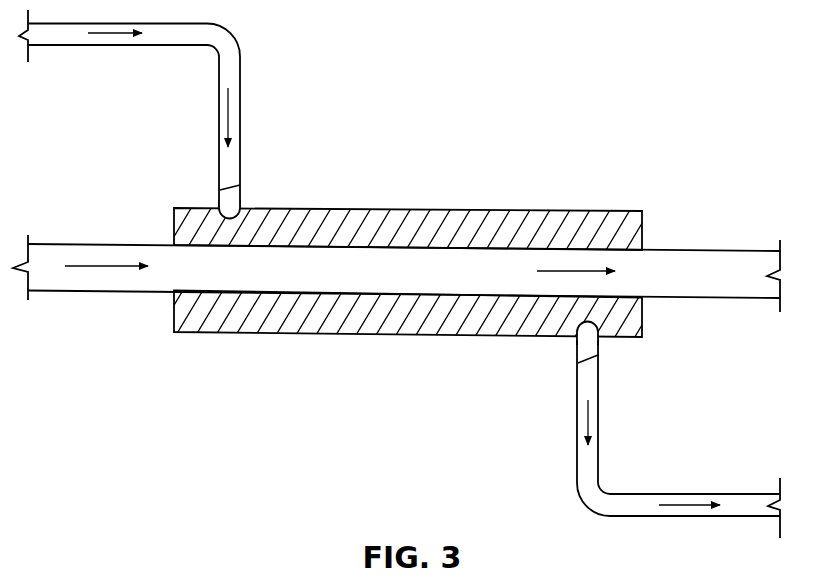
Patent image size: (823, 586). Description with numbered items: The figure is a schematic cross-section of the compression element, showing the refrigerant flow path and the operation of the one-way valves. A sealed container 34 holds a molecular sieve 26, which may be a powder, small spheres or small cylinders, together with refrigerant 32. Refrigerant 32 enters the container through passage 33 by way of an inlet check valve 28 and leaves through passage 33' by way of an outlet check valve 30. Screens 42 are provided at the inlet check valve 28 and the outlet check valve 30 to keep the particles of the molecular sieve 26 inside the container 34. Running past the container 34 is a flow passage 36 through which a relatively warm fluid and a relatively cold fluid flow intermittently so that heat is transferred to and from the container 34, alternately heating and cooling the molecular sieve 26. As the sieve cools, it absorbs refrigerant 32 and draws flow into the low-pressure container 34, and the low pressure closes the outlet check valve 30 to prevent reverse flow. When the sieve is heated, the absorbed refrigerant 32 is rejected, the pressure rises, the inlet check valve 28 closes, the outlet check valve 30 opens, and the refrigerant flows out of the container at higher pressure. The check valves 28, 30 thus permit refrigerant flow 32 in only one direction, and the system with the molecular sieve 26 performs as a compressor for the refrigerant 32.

The molecular sieve 26 is at (433, 227).
The inlet check valve 28 is at (229, 183).
The outlet check valve 30 is at (594, 356).
The refrigerant flow 32 is at (399, 274).
The passage 33 is at (246, 116).
The passage 33' is at (618, 428).
The sealed container 34 is at (543, 211).
The flow passage 36 is at (396, 273).
The screens 42 is at (228, 215).